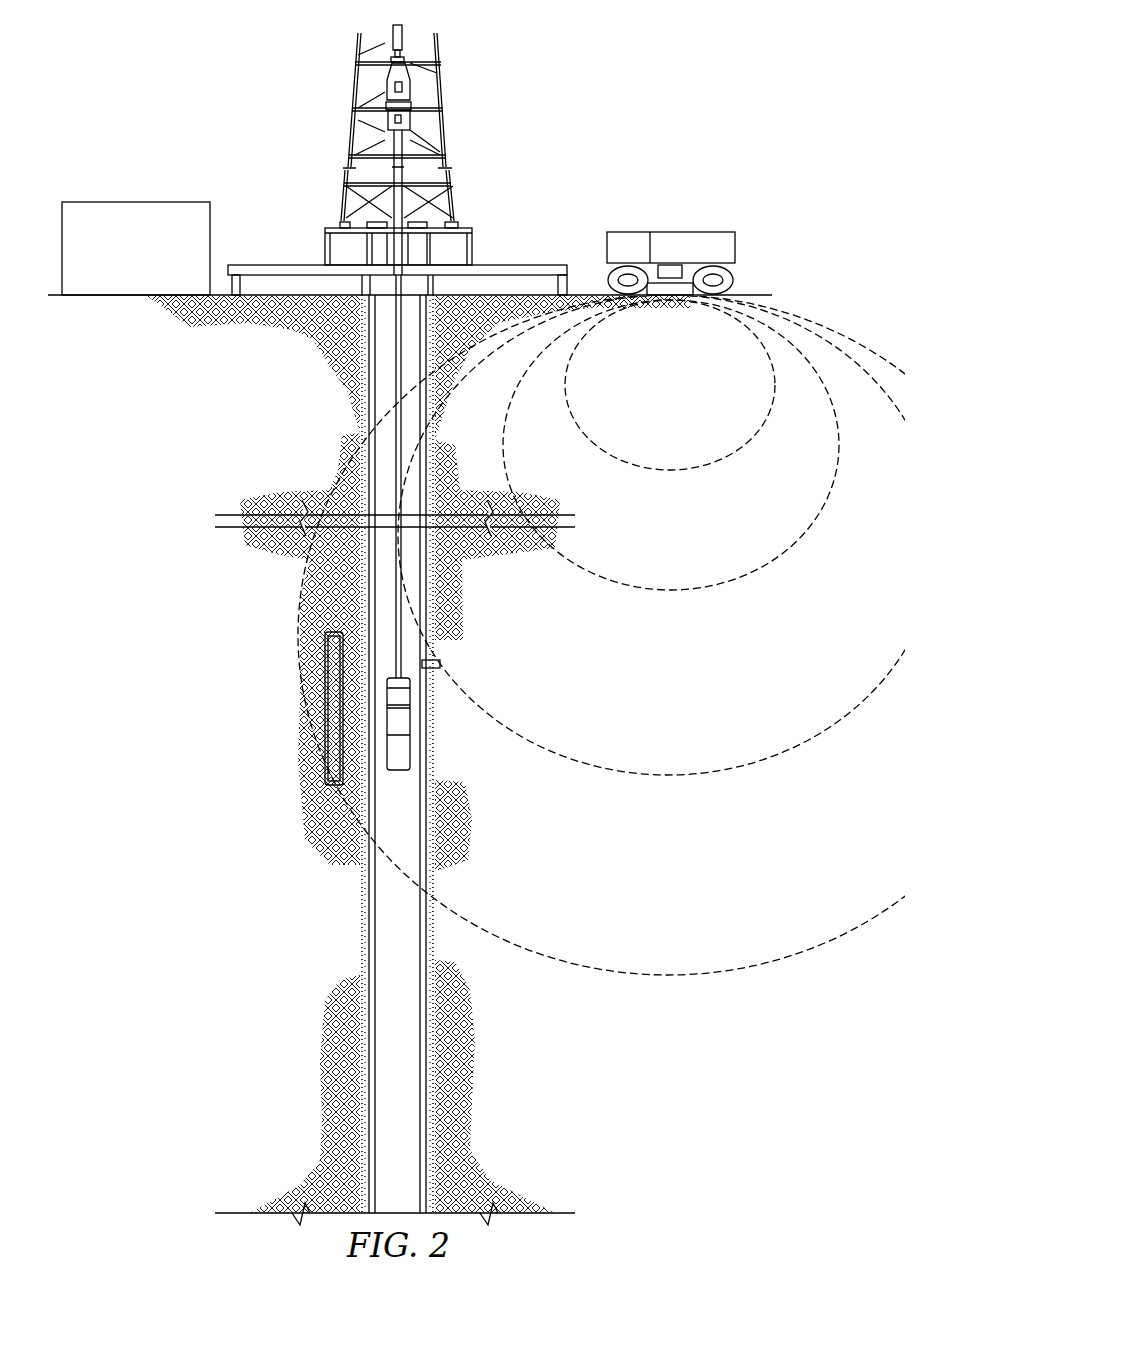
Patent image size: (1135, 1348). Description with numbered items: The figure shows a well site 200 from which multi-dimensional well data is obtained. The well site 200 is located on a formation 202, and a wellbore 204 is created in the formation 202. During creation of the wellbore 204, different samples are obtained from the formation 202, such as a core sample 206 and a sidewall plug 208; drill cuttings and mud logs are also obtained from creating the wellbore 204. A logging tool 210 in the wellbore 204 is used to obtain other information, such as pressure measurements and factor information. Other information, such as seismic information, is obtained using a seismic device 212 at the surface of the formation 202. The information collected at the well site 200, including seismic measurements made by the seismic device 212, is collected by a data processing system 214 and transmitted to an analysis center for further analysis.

The well site 200 is at (280, 130).
The formation 202 is at (238, 372).
The wellbore 204 is at (356, 381).
The core sample 206 is at (323, 762).
The sidewall plug 208 is at (440, 664).
The logging tool 210 is at (410, 745).
The seismic device 212 is at (690, 232).
The data processing system 214 is at (115, 201).